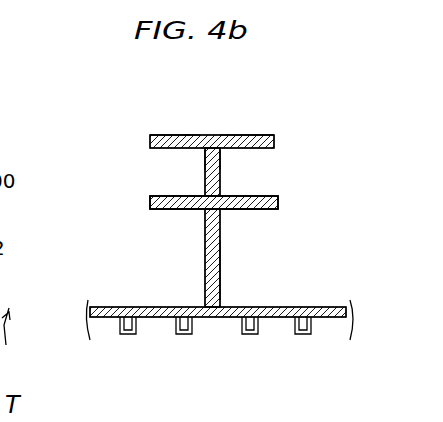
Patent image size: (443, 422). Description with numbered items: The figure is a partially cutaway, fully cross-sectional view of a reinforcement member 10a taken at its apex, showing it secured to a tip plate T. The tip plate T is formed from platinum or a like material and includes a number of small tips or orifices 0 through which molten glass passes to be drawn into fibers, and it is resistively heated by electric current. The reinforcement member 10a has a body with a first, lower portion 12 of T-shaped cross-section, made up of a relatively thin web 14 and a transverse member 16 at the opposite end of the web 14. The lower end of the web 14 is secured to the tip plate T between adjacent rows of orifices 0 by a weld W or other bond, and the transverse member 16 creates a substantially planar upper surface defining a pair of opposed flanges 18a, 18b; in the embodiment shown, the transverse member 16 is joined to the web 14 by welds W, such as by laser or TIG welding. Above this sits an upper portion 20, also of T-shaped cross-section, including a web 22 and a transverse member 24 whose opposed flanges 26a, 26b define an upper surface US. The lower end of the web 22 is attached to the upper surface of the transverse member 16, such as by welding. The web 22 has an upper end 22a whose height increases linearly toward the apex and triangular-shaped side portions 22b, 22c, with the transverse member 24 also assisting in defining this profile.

The reinforcement member 10a is at (107, 80).
The lower portion 12 is at (297, 198).
The web 14 is at (210, 257).
The transverse member 16 is at (205, 210).
The flange 18a is at (165, 199).
The flange 18b is at (277, 198).
The upper portion 20 is at (302, 190).
The web 22 is at (205, 182).
The upper end of the web 22a is at (229, 134).
The triangular-shaped side portion 22b is at (205, 159).
The triangular-shaped side portion 22c is at (221, 161).
The transverse member 24 is at (212, 135).
The flange 26a is at (172, 134).
The flange 26b is at (258, 134).
The upper surface US is at (192, 135).
The weld W is at (222, 302).
The tip plate T is at (318, 307).
The opening 0 is at (182, 335).